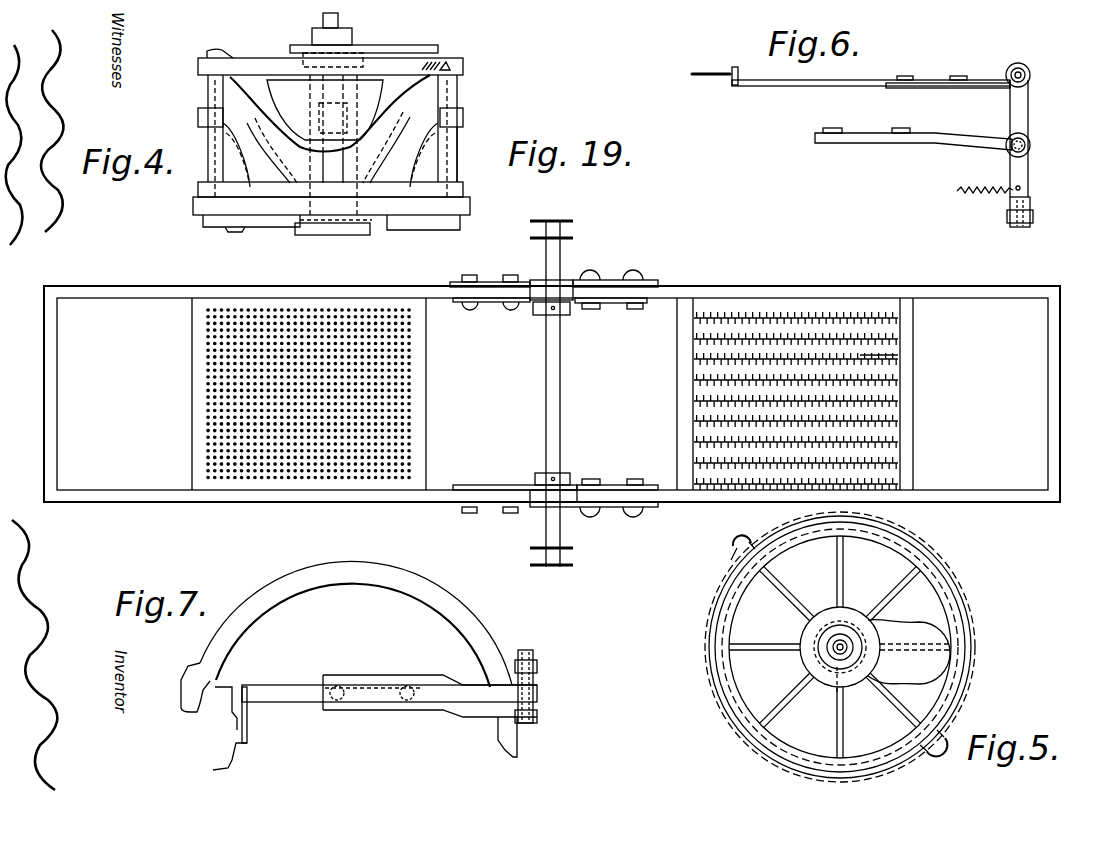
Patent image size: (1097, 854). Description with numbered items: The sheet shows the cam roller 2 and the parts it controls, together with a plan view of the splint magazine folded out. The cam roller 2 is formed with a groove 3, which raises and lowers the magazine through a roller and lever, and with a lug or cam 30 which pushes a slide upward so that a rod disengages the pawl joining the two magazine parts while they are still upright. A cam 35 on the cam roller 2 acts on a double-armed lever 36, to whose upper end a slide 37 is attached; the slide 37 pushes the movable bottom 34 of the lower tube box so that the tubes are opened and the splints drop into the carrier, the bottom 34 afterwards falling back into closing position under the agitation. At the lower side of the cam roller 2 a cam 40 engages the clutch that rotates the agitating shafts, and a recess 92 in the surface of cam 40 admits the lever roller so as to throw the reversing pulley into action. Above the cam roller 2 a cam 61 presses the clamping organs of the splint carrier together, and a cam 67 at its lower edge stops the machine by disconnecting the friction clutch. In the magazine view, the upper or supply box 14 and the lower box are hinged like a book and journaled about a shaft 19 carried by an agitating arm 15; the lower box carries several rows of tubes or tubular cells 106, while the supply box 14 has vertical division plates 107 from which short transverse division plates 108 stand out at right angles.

In FIG. 4, the cam roller 2 is at (455, 164).
In FIG. 7, the cam roller 2 is at (295, 574).
In FIG. 5, the cam roller 2 is at (965, 634).
In FIG. 4, the groove 3 is at (440, 104).
In FIG. 19, the upper or supply box 14 is at (798, 294).
In FIG. 19, the agitating arm 15 is at (276, 297).
In FIG. 19, the shaft 19 is at (558, 392).
In FIG. 4, the lug or cam 30 is at (218, 50).
In FIG. 6, the movable bottom 34 is at (707, 81).
In FIG. 7, the movable bottom 34 is at (233, 757).
In FIG. 4, the cam 35 is at (436, 60).
In FIG. 7, the cam 35 is at (180, 668).
In FIG. 5, the cam 35 is at (957, 731).
In FIG. 6, the double-armed lever 36 is at (1010, 108).
In FIG. 6, the slide 37 is at (836, 88).
In FIG. 7, the slide 37 is at (308, 702).
In FIG. 4, the cam 40 is at (265, 228).
In FIG. 4, the cam 61 is at (385, 45).
In FIG. 5, the cam 61 is at (867, 690).
In FIG. 5, the cam 67 is at (745, 553).
In FIG. 4, the recess 92 is at (378, 217).
In FIG. 19, the tubes or tubular cells 106 is at (349, 310).
In FIG. 19, the vertical partitions or division plates 107 is at (883, 337).
In FIG. 19, the short transverse division plates 108 is at (888, 355).